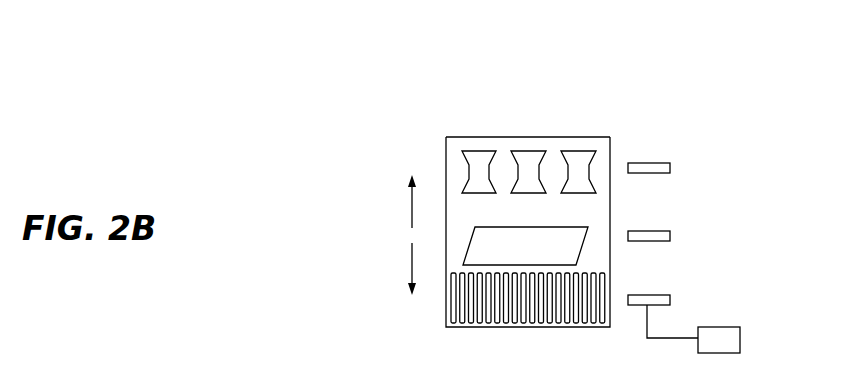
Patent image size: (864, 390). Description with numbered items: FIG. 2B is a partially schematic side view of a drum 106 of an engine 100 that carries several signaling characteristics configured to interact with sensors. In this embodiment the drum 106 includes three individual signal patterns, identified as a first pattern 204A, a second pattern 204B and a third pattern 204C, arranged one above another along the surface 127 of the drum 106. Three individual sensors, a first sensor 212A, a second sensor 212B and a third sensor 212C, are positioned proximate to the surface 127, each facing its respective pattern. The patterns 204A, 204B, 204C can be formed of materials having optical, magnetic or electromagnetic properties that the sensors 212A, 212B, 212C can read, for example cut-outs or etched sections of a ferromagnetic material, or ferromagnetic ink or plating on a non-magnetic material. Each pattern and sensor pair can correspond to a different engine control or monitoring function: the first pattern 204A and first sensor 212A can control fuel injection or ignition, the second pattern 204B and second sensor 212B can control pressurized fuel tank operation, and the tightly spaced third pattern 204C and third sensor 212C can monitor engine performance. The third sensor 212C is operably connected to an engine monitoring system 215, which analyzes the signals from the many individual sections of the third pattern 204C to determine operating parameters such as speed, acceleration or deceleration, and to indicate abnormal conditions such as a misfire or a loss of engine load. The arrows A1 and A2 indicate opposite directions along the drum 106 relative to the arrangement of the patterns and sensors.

The electronic device 100 is at (647, 79).
The surface 127 is at (455, 147).
The drum 106 is at (515, 137).
The first pattern 204A is at (599, 169).
The second pattern 204B is at (590, 233).
The third pattern 204C is at (609, 272).
The first sensor 212A is at (670, 168).
The second sensor 212B is at (670, 236).
The third sensor 212C is at (670, 299).
The engine monitoring system 215 is at (740, 341).
The first direction A1 is at (410, 268).
The second direction A2 is at (410, 208).